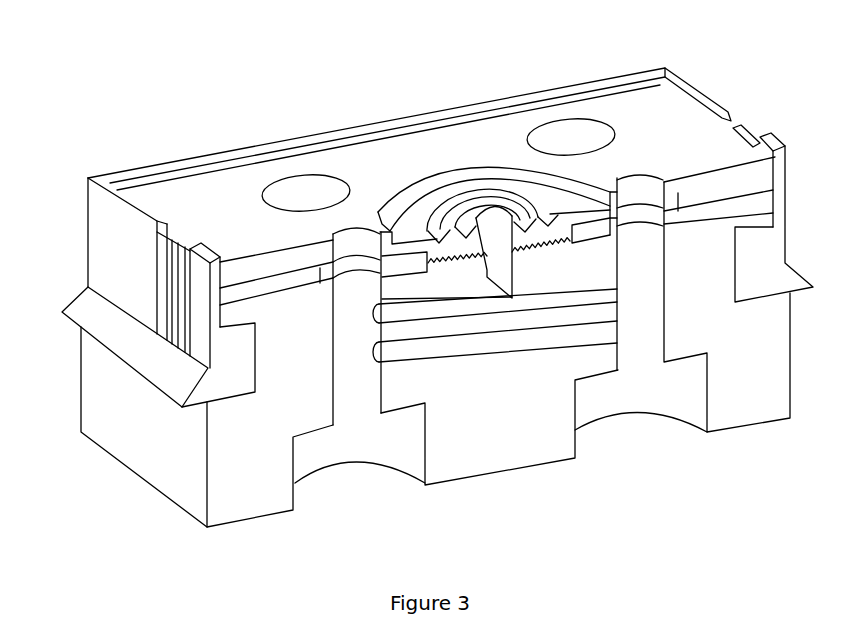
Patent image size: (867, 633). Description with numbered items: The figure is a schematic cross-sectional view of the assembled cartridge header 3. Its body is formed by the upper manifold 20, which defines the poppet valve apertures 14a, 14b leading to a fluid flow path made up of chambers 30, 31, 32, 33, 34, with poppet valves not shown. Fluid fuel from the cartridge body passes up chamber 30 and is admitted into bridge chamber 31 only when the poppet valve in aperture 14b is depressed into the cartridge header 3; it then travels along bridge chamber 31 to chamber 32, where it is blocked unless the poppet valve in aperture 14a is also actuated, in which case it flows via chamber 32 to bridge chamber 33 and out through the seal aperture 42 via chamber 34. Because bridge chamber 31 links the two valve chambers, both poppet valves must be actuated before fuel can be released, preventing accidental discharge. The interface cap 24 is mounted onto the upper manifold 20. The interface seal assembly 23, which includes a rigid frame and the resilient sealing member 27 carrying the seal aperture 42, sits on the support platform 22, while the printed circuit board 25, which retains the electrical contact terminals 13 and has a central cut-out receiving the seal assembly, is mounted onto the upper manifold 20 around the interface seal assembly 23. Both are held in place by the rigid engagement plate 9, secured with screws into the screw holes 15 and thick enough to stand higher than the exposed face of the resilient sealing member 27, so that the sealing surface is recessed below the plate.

The cartridge header 3 is at (121, 97).
The rigid engagement plate 9 is at (222, 190).
The electrical contact terminals 13 is at (160, 260).
The poppet valve aperture 14a is at (357, 293).
The poppet valve aperture 14b is at (647, 235).
The screw holes 15 is at (327, 188).
The upper manifold 20 is at (160, 465).
The support platform 22 is at (594, 240).
The interface seal assembly 23 is at (410, 217).
The interface cap 24 is at (68, 296).
The printed circuit board 25 is at (758, 203).
The resilient sealing member 27 is at (562, 200).
The chamber 30 is at (653, 402).
The bridge chamber 31 is at (488, 333).
The chamber 32 is at (353, 445).
The bridge chamber 33 is at (410, 302).
The chamber 34 is at (495, 263).
The seal aperture 42 is at (492, 222).